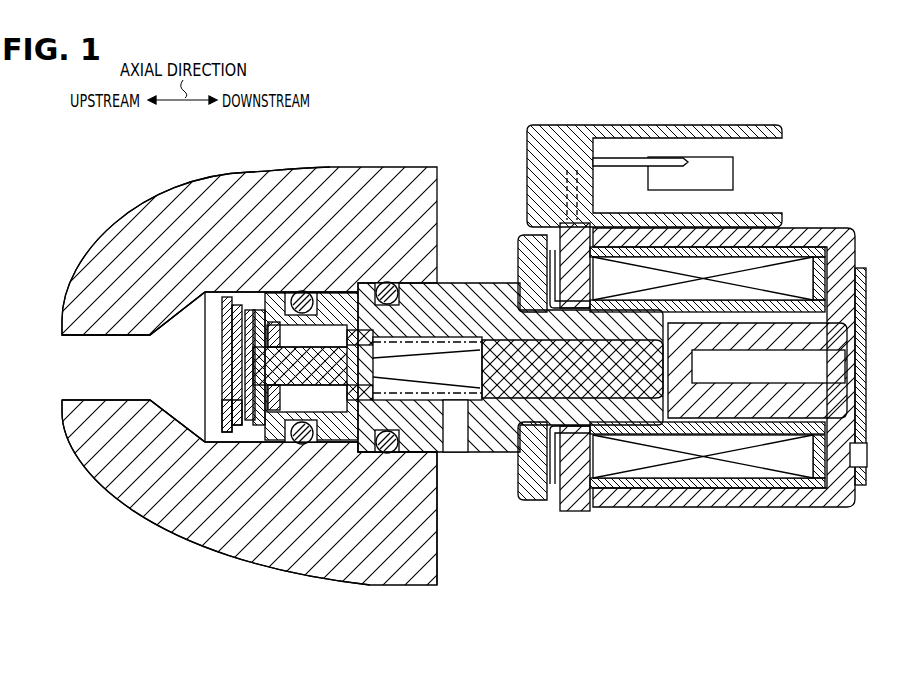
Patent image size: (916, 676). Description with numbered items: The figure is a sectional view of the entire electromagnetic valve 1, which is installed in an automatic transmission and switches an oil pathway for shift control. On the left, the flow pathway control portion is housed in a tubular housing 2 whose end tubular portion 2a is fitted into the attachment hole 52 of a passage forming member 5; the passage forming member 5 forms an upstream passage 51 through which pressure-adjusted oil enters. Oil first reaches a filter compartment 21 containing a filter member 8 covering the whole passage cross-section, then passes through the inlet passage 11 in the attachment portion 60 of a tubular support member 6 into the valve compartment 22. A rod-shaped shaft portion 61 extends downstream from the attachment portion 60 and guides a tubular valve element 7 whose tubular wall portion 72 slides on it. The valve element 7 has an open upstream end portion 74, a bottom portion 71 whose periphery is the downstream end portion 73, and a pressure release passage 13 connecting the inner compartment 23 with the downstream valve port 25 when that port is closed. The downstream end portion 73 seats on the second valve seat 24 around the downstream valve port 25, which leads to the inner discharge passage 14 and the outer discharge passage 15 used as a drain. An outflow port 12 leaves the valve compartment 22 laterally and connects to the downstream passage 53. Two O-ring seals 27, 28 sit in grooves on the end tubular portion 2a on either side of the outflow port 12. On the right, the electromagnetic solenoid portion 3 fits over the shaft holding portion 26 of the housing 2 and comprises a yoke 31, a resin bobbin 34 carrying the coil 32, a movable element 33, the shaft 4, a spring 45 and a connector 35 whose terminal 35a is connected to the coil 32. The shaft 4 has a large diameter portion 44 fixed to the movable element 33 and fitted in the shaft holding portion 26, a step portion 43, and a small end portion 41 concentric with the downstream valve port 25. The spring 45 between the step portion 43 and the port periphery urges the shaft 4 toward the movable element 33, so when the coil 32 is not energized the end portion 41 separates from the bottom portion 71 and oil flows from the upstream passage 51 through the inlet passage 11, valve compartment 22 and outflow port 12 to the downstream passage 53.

The electromagnetic valve 1 is at (508, 110).
The housing 2 is at (190, 460).
The end tubular portion 2a is at (210, 445).
The electromagnetic solenoid portion 3 is at (705, 510).
The shaft 4 is at (633, 380).
The passage forming member 5 is at (225, 437).
The support member 6 is at (237, 432).
The valve element 7 is at (262, 320).
The filter member 8 is at (168, 300).
The inlet passage 11 is at (150, 470).
The outflow port 12 is at (302, 292).
The pressure release passage 13 is at (315, 414).
The inner discharge passage 14 is at (465, 320).
The outer discharge passage 15 is at (452, 385).
The filter compartment 21 is at (188, 308).
The valve compartment 22 is at (285, 335).
The inner compartment 23 is at (100, 487).
The second valve seat 24 is at (462, 350).
The downstream valve port 25 is at (392, 455).
The shaft holding portion 26 is at (533, 490).
The O-ring seal 27 is at (272, 412).
The O-ring seal 28 is at (372, 450).
The yoke 31 is at (808, 235).
The coil 32 is at (800, 270).
The movable element 33 is at (820, 333).
The bobbin 34 is at (775, 305).
The connector 35 is at (675, 127).
The terminal 35a is at (628, 162).
The end portion 41 is at (434, 470).
The step portion 43 is at (522, 470).
The large diameter portion 44 is at (660, 430).
The spring 45 is at (456, 430).
The upstream passage 51 is at (103, 340).
The attachment hole 52 is at (207, 300).
The downstream passage 53 is at (320, 330).
The attachment portion 60 is at (238, 325).
The shaft portion 61 is at (258, 428).
The bottom portion 71 is at (345, 400).
The tubular wall portion 72 is at (300, 445).
The downstream end portion 73 is at (348, 360).
The upstream end portion 74 is at (226, 434).